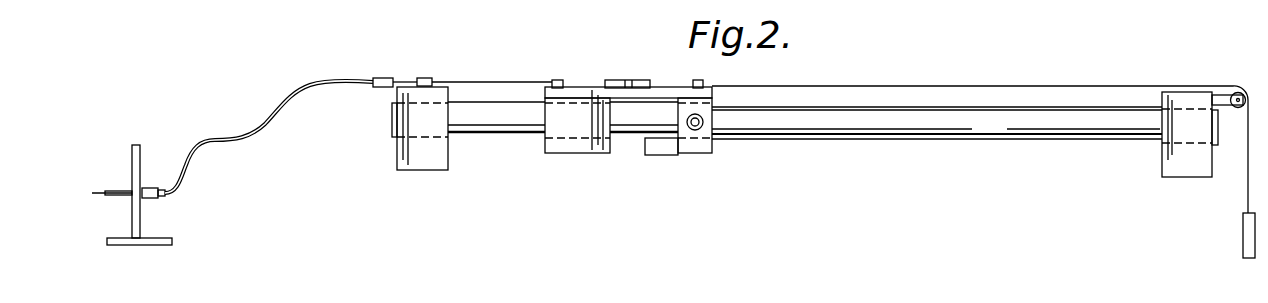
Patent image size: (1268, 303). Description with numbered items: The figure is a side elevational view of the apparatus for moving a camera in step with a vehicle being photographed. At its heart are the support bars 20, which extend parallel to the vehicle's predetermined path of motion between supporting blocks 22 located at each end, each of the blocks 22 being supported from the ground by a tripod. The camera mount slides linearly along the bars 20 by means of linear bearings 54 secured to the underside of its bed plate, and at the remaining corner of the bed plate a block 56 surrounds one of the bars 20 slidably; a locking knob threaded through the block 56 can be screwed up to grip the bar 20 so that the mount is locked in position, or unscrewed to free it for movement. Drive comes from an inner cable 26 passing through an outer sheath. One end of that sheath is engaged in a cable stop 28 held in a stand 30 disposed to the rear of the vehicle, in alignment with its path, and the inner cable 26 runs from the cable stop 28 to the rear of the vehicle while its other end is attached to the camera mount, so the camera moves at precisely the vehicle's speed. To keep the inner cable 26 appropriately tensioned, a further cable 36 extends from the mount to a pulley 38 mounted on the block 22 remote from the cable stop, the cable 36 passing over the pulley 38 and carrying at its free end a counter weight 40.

The support bars 20 is at (980, 132).
The supporting blocks 22 is at (440, 162).
The inner cable 26 is at (98, 193).
The cable stop 28 is at (148, 182).
The stand 30 is at (142, 227).
The further cable 36 is at (935, 80).
The pulley 38 is at (1245, 83).
The counter weight 40 is at (1248, 227).
The linear bearings 54 is at (567, 148).
The block 56 is at (703, 150).